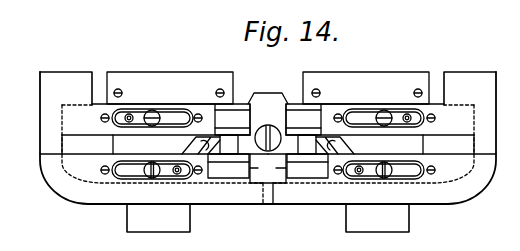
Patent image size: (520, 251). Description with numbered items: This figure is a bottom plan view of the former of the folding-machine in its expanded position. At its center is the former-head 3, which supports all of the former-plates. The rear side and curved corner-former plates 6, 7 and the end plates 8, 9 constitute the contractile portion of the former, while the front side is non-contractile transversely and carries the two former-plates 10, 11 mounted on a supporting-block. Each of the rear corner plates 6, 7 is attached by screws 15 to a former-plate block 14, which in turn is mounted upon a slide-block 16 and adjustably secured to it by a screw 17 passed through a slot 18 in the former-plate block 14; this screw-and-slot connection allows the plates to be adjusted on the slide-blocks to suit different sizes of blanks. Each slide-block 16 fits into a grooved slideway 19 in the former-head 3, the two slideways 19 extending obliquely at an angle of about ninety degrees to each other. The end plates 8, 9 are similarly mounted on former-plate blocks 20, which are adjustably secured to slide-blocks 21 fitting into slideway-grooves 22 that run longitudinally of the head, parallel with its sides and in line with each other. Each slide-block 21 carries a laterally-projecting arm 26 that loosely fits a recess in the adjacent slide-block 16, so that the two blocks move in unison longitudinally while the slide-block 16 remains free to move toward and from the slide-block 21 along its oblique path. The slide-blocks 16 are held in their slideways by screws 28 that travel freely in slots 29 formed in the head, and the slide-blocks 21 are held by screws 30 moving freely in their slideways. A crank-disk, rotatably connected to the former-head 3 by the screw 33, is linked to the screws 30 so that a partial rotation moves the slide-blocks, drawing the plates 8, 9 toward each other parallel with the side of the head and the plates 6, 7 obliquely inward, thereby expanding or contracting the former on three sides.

The former-head 3 is at (279, 112).
The rear side and curved corner-former plate 6 is at (82, 198).
The rear side and curved corner-former plate 7 is at (468, 198).
The end plate 8 is at (45, 113).
The end plate 9 is at (492, 116).
The former-plate 10 is at (177, 79).
The former-plate 11 is at (366, 76).
The former-plate block 14 is at (124, 180).
The screw 15 is at (101, 171).
The slide-block 16 is at (268, 179).
The screw 17 is at (154, 180).
The slot 18 is at (116, 179).
The grooved slideway 19 is at (192, 146).
The former-plate block 20 is at (138, 128).
The slide-block 21 is at (233, 117).
The slideway-groove 22 is at (259, 118).
The laterally-projecting arm 26 is at (268, 144).
The screw 28 is at (177, 176).
The slot 29 is at (206, 157).
The screw 30 is at (131, 115).
The screw 33 is at (278, 141).